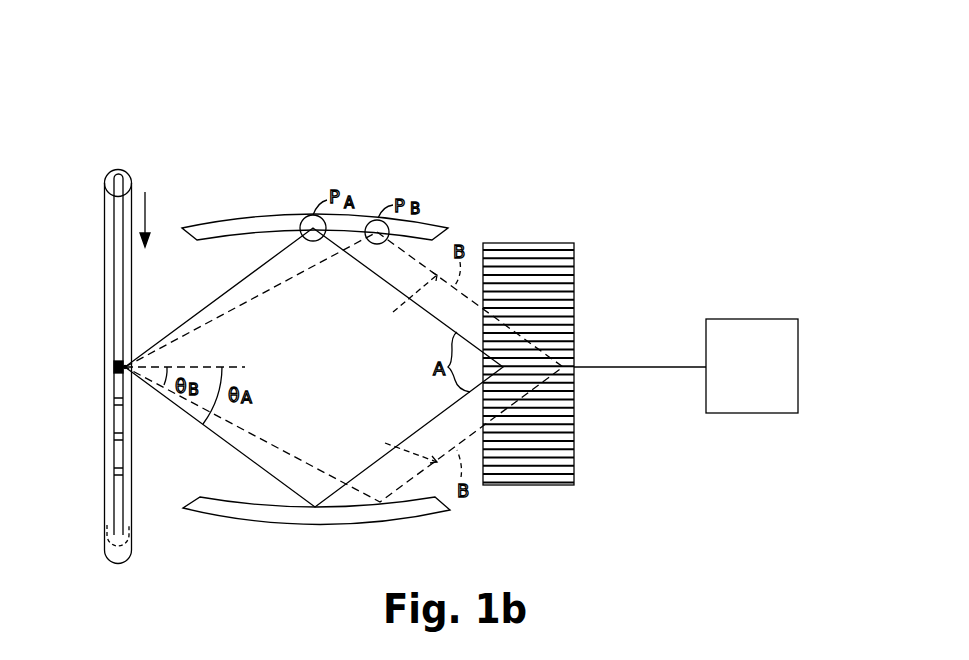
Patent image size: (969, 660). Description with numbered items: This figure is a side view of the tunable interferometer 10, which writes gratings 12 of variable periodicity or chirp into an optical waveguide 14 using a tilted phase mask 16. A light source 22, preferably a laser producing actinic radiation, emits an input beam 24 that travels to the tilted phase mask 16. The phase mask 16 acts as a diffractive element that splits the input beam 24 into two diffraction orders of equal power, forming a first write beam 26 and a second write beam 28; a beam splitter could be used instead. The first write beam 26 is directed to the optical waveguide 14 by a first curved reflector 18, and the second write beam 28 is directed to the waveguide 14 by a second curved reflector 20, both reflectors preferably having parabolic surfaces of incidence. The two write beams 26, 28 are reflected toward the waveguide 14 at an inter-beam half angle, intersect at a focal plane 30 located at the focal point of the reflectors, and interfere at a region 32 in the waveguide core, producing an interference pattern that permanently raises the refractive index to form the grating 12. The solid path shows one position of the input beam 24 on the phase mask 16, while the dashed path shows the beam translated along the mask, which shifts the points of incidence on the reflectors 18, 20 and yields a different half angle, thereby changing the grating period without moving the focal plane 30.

The tunable interferometer 10 is at (462, 147).
The grating 12 is at (102, 357).
The optical waveguide 14 is at (105, 220).
The tilted phase mask 16 is at (553, 247).
The first curved reflector 18 is at (248, 215).
The second curved reflector 20 is at (407, 513).
The light source 22 is at (747, 319).
The input beam 24 is at (667, 372).
The first write beam 26 is at (408, 297).
The second write beam 28 is at (378, 456).
The focal plane 30 is at (128, 378).
The region 32 is at (118, 358).